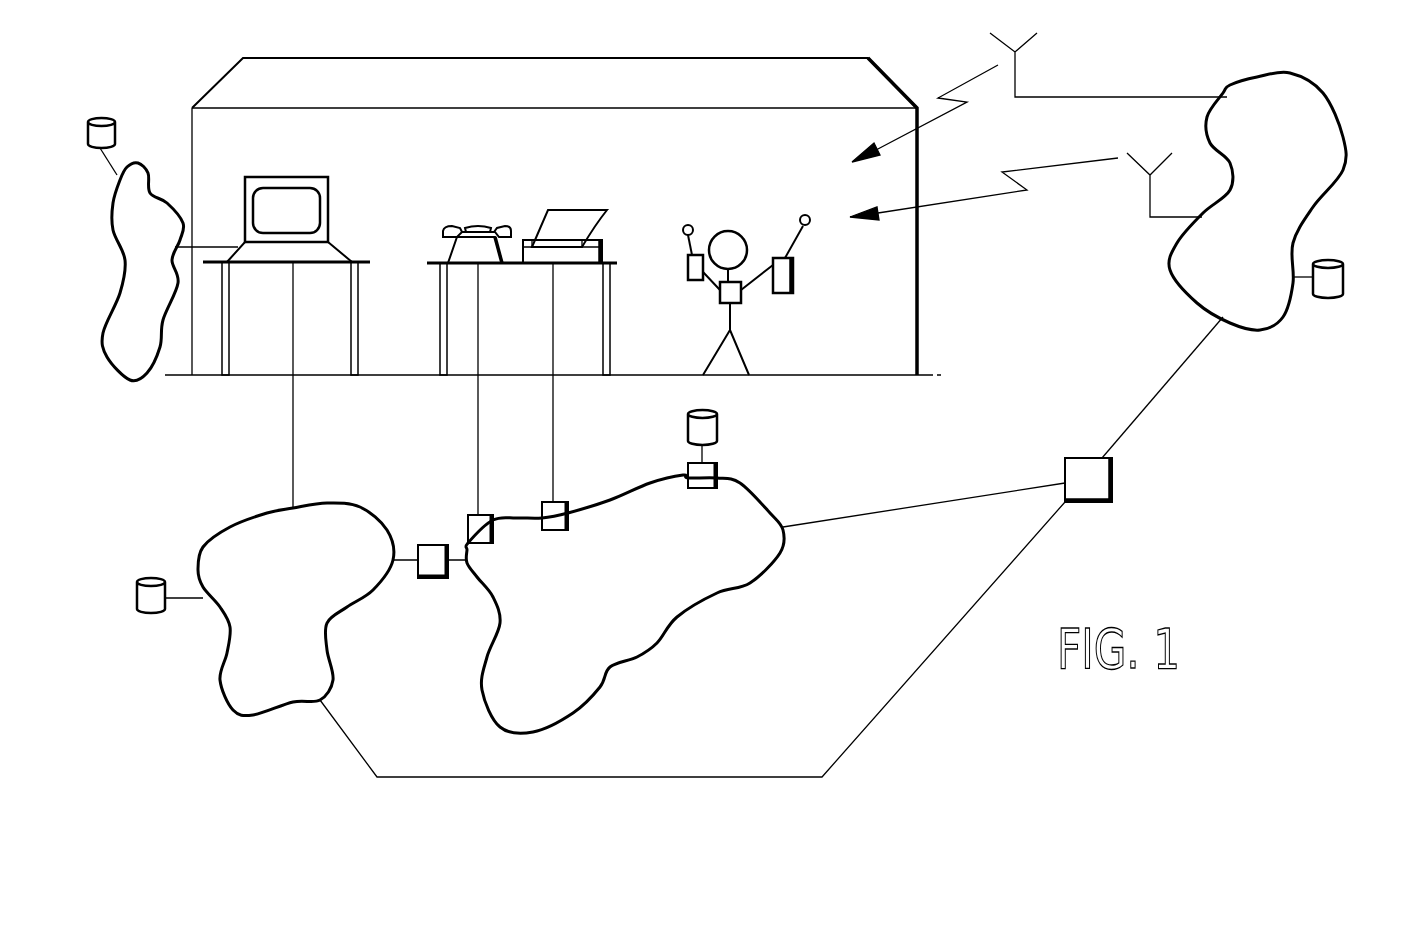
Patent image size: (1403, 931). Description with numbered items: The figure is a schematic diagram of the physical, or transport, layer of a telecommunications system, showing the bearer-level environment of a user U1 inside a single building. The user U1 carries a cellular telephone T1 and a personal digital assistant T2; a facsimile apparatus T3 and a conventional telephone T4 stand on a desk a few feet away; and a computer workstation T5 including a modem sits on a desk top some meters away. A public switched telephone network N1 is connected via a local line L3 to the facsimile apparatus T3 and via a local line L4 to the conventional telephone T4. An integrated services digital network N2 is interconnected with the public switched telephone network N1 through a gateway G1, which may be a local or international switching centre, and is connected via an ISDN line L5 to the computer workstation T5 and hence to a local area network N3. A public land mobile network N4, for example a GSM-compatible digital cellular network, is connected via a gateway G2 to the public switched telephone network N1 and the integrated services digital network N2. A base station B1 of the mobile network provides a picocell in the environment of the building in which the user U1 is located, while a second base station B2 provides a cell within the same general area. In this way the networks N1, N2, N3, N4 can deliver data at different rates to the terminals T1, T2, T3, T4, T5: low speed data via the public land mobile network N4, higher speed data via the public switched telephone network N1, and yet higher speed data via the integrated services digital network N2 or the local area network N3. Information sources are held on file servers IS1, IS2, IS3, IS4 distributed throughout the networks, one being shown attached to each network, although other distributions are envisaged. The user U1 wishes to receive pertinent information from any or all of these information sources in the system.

The file server IS1 is at (717, 425).
The file server IS2 is at (151, 613).
The file server IS3 is at (98, 118).
The file server IS4 is at (1343, 265).
The public switched telephone network N1 is at (655, 647).
The integrated services digital network N2 is at (333, 672).
The local area network N3 is at (145, 378).
The public land mobile network N4 is at (1287, 320).
The local line L3 is at (553, 420).
The local line L4 is at (478, 440).
The ISDN line L5 is at (293, 408).
The gateway G1 is at (433, 578).
The gateway G2 is at (1112, 477).
The base station B1 is at (1039, 97).
The base station B2 is at (1026, 186).
The cellular telephone T1 is at (793, 275).
The personal digital assistant T2 is at (690, 280).
The facsimile apparatus T3 is at (521, 240).
The conventional telephone T4 is at (447, 250).
The computer workstation T5 is at (332, 193).
The user U1 is at (730, 232).